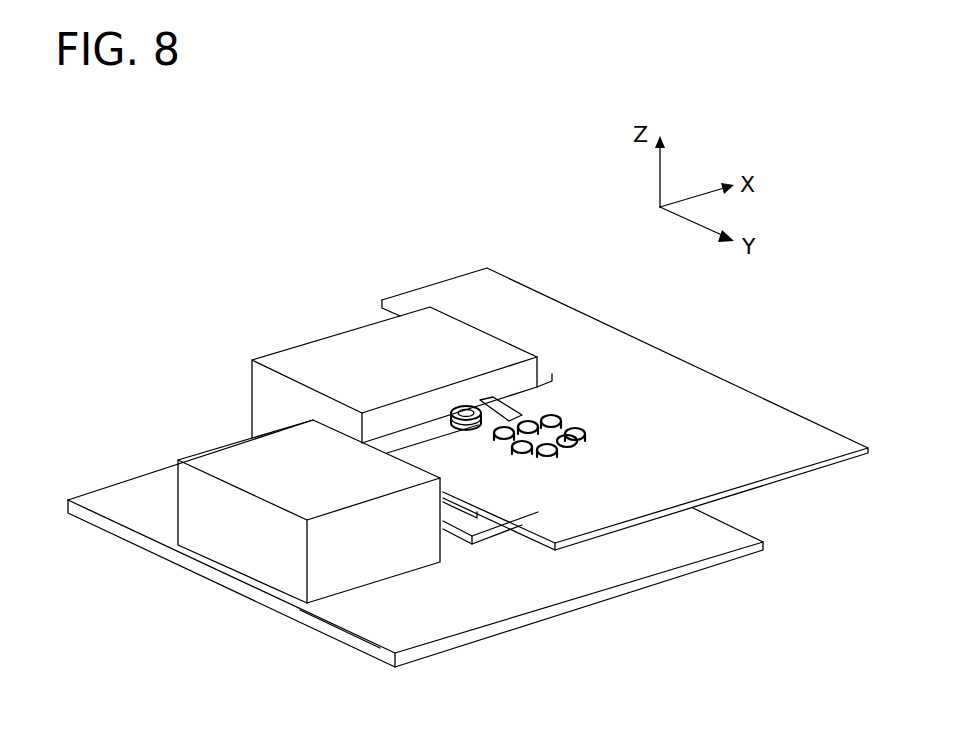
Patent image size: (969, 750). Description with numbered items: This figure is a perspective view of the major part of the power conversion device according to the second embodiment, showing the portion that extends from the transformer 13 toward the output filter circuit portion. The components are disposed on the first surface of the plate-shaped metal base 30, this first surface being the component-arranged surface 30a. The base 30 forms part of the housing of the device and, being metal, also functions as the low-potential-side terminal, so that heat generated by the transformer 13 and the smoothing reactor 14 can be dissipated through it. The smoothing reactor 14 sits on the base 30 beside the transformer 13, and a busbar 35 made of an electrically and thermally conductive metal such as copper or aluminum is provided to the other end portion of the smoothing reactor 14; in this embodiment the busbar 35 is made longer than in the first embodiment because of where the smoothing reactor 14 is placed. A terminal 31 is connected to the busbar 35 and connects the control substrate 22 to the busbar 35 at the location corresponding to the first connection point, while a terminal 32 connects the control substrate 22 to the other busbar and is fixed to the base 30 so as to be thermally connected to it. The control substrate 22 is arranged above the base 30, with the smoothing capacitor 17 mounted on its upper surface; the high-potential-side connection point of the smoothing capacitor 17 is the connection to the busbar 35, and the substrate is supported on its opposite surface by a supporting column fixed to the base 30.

The transformer 13 is at (308, 360).
The smoothing reactor 14 is at (212, 550).
The smoothing capacitor 17 is at (605, 370).
The control substrate 22 is at (750, 410).
The base 30 is at (667, 575).
The component-arranged surface 30a is at (378, 628).
The terminal 31 is at (578, 424).
The terminal 32 is at (505, 410).
The busbar 35 is at (463, 528).